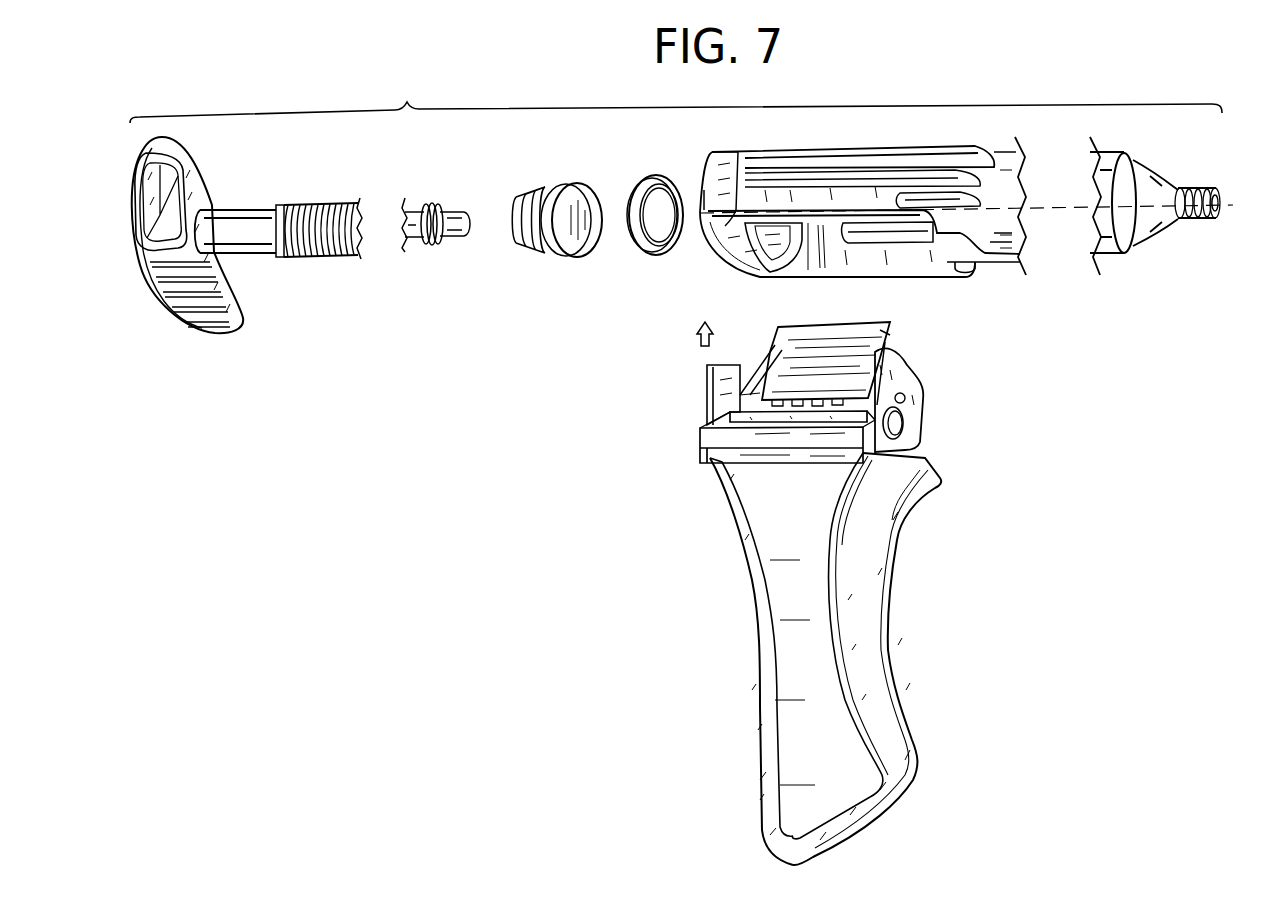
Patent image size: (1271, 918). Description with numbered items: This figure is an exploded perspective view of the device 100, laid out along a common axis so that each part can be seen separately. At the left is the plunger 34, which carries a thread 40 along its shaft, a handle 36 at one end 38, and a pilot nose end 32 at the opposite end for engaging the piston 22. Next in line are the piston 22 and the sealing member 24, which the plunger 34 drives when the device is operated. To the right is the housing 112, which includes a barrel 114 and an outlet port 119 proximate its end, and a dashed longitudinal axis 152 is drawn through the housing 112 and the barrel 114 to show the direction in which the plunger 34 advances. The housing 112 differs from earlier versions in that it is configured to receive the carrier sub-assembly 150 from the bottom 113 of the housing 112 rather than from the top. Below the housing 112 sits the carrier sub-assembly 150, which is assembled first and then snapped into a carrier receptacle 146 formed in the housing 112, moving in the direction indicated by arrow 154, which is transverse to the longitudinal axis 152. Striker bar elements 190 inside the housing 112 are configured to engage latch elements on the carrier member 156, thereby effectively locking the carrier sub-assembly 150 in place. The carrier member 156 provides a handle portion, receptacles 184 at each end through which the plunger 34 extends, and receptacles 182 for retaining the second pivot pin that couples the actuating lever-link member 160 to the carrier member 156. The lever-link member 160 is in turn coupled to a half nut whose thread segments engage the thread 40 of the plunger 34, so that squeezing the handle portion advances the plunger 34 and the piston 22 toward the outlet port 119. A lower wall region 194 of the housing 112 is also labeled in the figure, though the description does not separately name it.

The device 100 is at (676, 97).
The end 38 is at (162, 303).
The handle 36 is at (209, 312).
The plunger 34 is at (338, 268).
The thread 40 is at (316, 207).
The pilot nose end 32 is at (451, 232).
The piston 22 is at (554, 272).
The sealing member 24 is at (652, 266).
The housing 112 is at (870, 252).
The lower housing wall 194 is at (718, 252).
The bottom 113 is at (778, 278).
The striker bar elements 190 is at (867, 244).
The carrier receptacle 146 is at (900, 268).
The barrel 114 is at (1003, 243).
The longitudinal axis 152 is at (1058, 211).
The outlet port 119 is at (1210, 220).
The arrow 154 is at (700, 343).
The carrier member 156 is at (810, 593).
The actuating lever-link member 160 is at (760, 378).
The receptacles 182 is at (913, 382).
The receptacles 184 is at (887, 425).
The carrier sub-assembly 150 is at (897, 528).